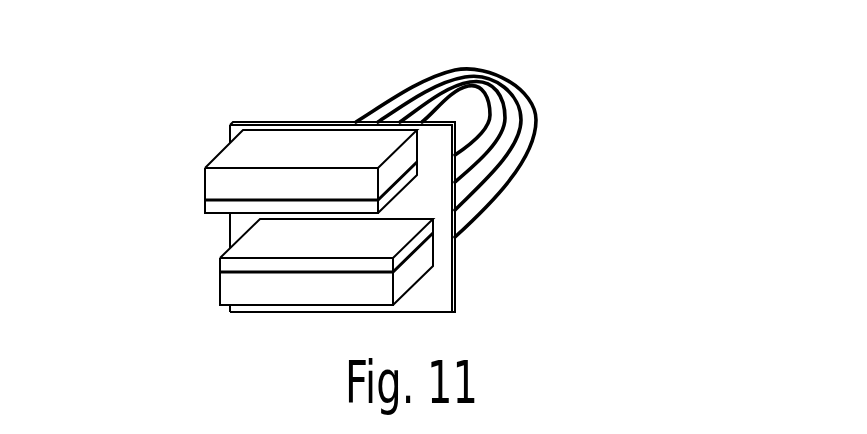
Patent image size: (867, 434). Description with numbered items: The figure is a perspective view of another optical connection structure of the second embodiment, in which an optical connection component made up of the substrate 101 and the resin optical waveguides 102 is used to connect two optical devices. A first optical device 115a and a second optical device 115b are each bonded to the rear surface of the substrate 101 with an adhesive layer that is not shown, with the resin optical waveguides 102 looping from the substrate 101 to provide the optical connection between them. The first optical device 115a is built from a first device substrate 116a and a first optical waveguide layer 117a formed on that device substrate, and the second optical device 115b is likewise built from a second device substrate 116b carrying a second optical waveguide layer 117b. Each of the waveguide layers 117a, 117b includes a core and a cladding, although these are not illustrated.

The substrate 101 is at (457, 292).
The resin optical waveguides 102 is at (390, 87).
The first optical device 115a is at (121, 191).
The second optical device 115b is at (129, 286).
The first device substrate 116a is at (205, 183).
The second device substrate 116b is at (220, 294).
The first optical waveguide layer 117a is at (205, 212).
The second optical waveguide layer 117b is at (220, 267).